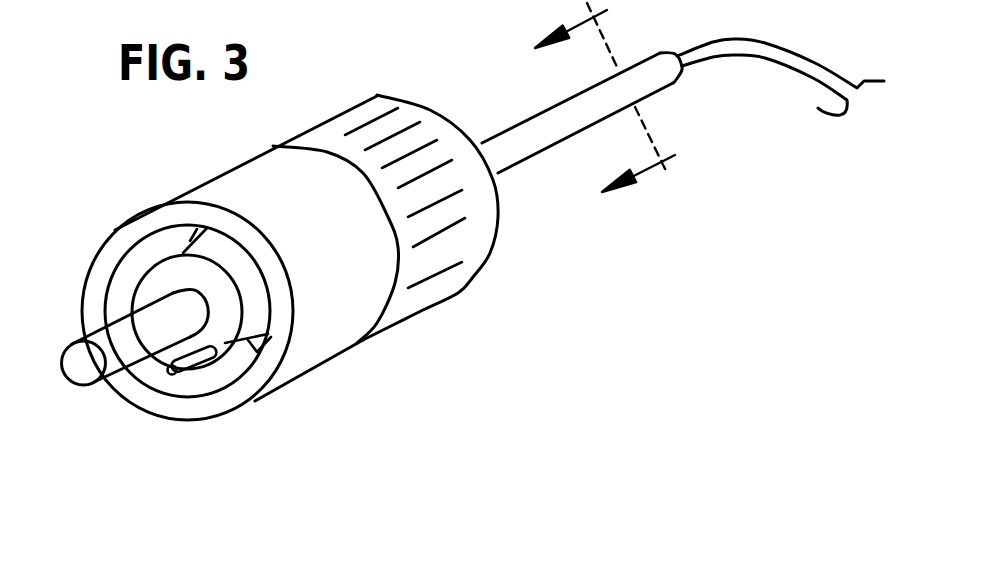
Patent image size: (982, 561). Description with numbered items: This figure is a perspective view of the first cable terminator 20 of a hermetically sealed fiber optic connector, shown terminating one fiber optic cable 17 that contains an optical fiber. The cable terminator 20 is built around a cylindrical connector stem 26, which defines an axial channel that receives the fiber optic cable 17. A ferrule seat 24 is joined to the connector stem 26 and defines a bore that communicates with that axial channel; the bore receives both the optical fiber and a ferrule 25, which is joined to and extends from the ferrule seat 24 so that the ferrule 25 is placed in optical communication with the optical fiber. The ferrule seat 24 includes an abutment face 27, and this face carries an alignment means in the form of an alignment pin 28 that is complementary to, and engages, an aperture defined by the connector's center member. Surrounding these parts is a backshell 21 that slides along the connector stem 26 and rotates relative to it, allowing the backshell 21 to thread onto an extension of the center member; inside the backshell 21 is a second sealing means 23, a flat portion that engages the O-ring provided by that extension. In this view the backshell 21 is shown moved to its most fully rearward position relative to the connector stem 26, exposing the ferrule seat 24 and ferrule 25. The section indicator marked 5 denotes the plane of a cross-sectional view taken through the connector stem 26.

The section line 5- 5 is at (620, 96).
The fiber optic cable 17 is at (770, 62).
The first cable terminator 20 is at (602, 359).
The backshell 21 is at (173, 416).
The second sealing means 23 is at (140, 380).
The ferrule seat 24 is at (162, 277).
The ferrule 25 is at (78, 366).
The connector stem 26 is at (525, 140).
The abutment face 27 is at (223, 308).
The alignment pin 28 is at (192, 371).